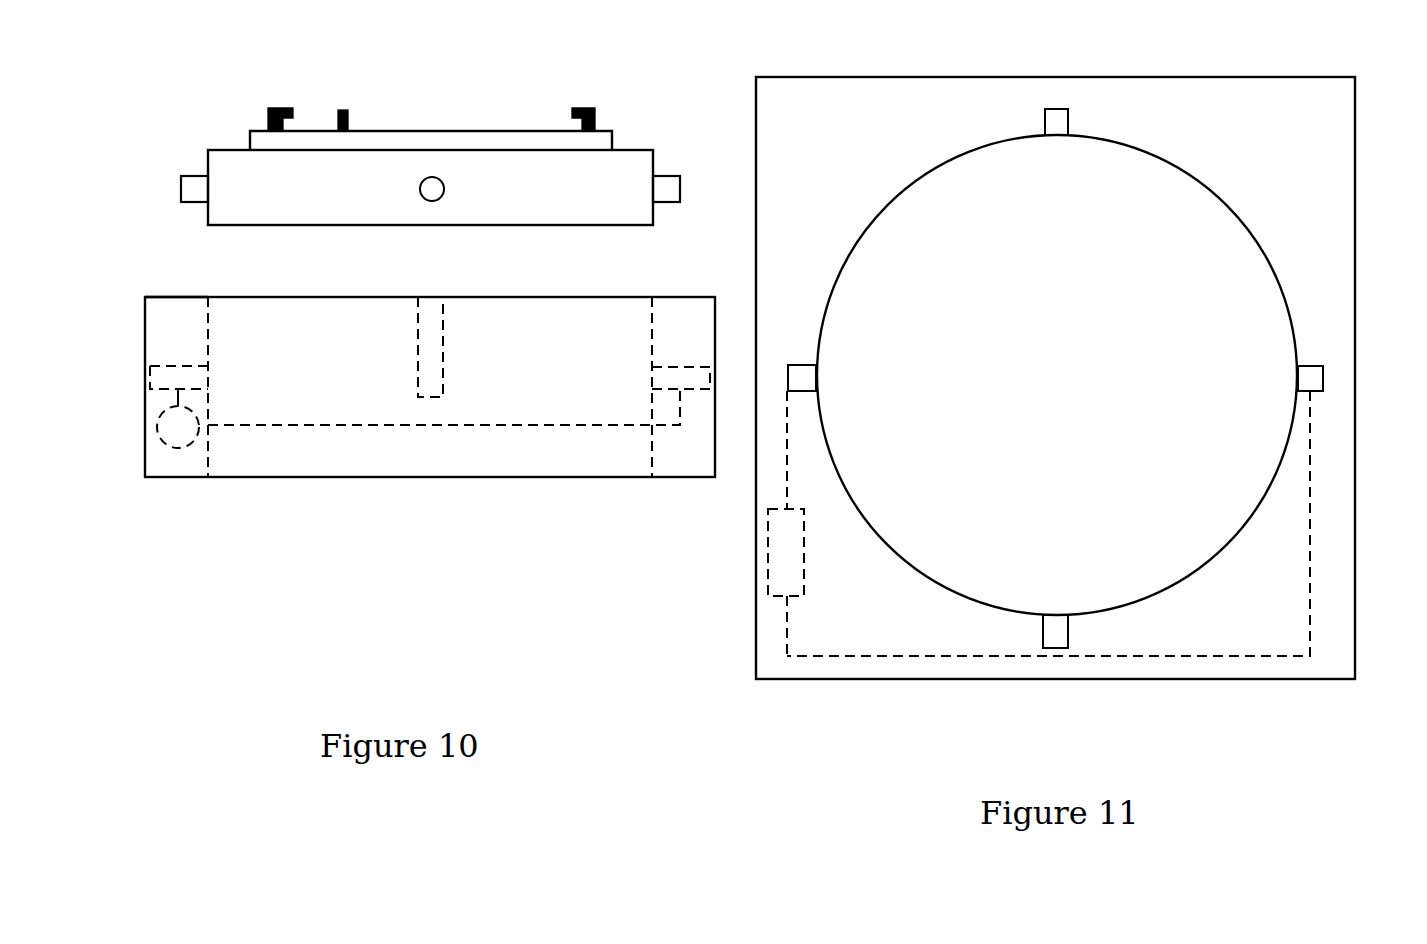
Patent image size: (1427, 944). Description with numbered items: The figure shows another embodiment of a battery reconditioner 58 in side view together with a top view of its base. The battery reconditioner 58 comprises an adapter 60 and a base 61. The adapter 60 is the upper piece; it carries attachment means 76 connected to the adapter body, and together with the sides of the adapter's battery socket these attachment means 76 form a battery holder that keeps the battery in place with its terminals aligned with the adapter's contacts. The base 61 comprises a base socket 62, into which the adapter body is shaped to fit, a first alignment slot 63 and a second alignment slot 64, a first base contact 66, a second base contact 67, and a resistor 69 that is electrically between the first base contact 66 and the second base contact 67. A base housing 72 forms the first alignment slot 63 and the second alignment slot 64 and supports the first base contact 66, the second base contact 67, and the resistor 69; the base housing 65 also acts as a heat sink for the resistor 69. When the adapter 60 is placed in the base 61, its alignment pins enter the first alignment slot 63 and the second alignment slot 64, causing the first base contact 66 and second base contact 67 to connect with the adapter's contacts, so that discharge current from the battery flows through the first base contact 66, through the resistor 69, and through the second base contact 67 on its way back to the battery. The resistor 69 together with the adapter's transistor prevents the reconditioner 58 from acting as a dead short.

In FIG. 10, the battery reconditioner 58 is at (604, 585).
In FIG. 10, the adapter 60 is at (218, 128).
In FIG. 10, the base 61 is at (128, 441).
In FIG. 10, the base socket 62 is at (652, 345).
In FIG. 11, the base socket 62 is at (907, 183).
In FIG. 11, the first alignment slot 63 is at (1068, 625).
In FIG. 10, the second alignment slot 64 is at (443, 382).
In FIG. 11, the second alignment slot 64 is at (1060, 109).
In FIG. 10, the base housing 65 is at (160, 305).
In FIG. 10, the first base contact 66 is at (168, 366).
In FIG. 11, the first base contact 66 is at (800, 365).
In FIG. 10, the second base contact 67 is at (690, 390).
In FIG. 11, the second base contact 67 is at (1323, 378).
In FIG. 10, the resistor 69 is at (195, 438).
In FIG. 11, the resistor 69 is at (775, 575).
In FIG. 11, the base housing 72 is at (1330, 660).
In FIG. 10, the attachment means 76 is at (278, 108).